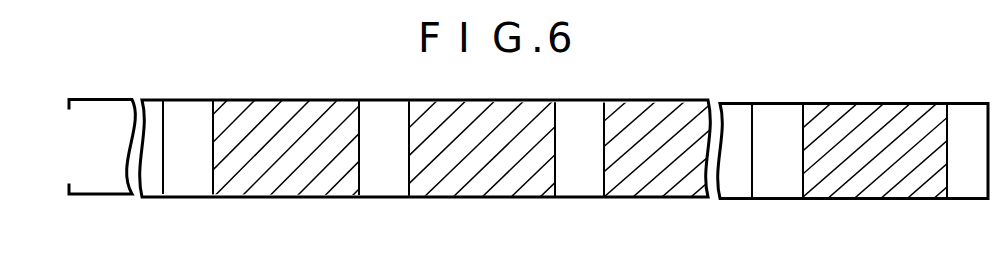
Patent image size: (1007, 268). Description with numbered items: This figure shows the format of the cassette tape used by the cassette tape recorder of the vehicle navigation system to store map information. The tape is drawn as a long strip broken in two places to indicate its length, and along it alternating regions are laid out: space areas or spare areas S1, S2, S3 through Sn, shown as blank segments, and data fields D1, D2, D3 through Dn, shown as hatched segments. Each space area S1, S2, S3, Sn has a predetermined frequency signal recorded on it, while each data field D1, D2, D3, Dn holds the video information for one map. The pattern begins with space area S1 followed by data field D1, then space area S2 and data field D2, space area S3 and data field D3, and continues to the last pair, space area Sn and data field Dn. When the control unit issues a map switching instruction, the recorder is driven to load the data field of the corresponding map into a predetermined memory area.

The space area S1 is at (193, 181).
The data field D1 is at (315, 181).
The space area S2 is at (390, 181).
The data field D2 is at (512, 181).
The space area S3 is at (585, 181).
The data field D3 is at (683, 181).
The space area Sn is at (783, 181).
The data field Dn is at (885, 181).